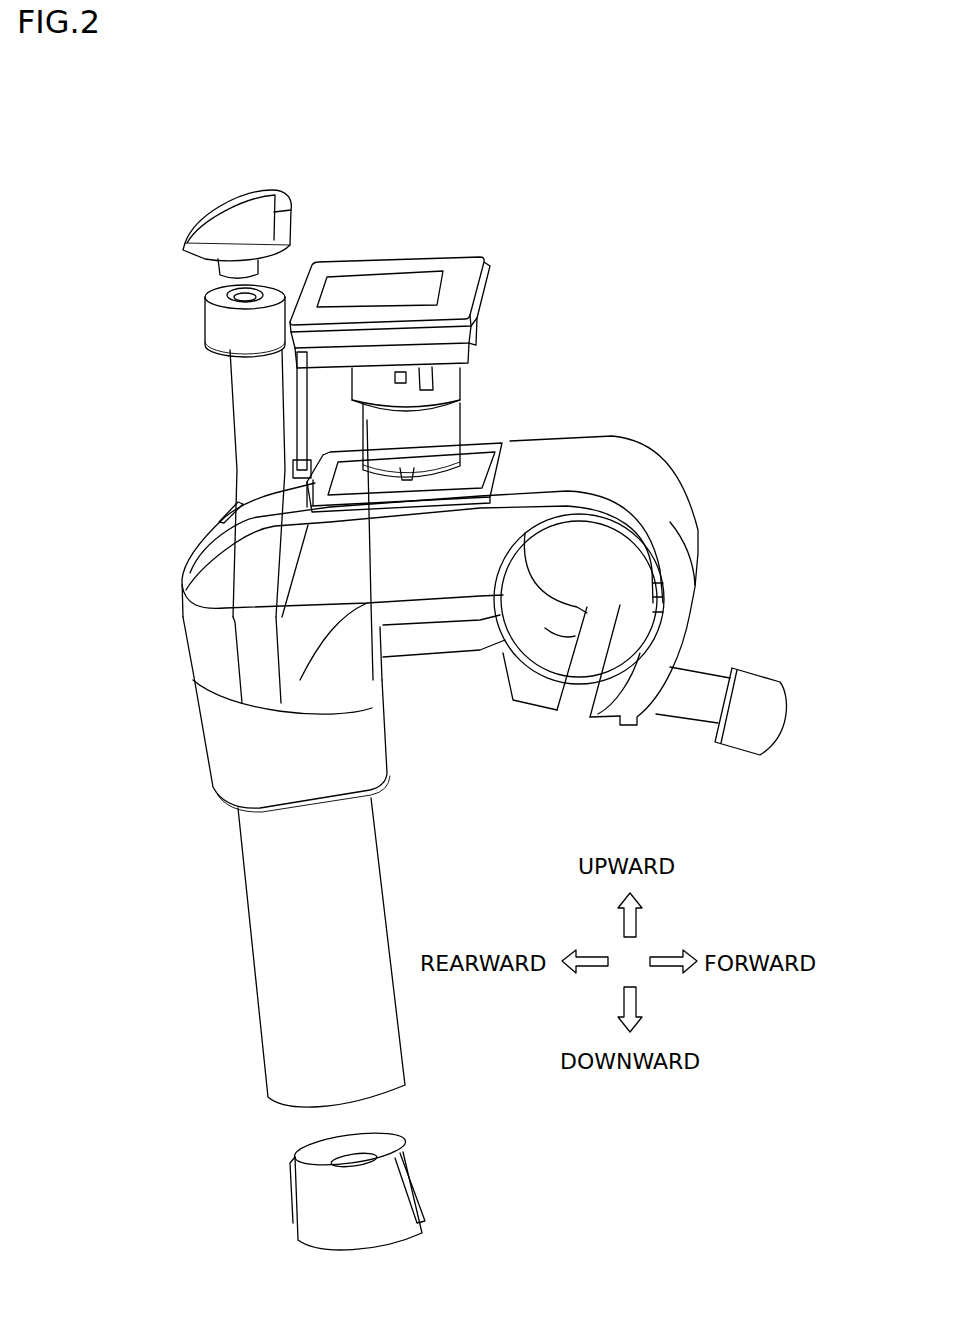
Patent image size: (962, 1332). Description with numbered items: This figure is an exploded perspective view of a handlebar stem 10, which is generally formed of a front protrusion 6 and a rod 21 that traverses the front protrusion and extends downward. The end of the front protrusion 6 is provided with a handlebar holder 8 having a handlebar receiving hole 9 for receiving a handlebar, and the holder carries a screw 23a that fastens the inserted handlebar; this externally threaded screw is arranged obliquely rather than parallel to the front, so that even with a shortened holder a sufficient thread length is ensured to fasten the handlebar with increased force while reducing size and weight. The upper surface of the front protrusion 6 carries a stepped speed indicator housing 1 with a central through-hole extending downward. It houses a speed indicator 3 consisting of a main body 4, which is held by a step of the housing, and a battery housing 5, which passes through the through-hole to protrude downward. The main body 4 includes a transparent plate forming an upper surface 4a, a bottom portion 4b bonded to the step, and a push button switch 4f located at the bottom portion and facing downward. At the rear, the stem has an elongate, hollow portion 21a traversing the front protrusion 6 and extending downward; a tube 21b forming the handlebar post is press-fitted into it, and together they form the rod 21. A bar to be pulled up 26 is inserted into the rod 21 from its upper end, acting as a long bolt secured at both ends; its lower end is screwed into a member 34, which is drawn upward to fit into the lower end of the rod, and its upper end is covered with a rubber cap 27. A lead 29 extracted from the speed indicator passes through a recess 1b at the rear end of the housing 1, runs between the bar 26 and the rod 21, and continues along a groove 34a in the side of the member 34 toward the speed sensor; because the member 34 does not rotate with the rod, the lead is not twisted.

The speed indicator housing 1 is at (478, 440).
The recess 1b is at (305, 480).
The speed indicator 3 is at (630, 290).
The main body 4 is at (563, 258).
The upper surface 4a is at (428, 274).
The bottom portion 4b is at (478, 320).
The push button switch 4f is at (460, 418).
The battery housing 5 is at (445, 432).
The front protrusion 6 is at (790, 136).
The handlebar holder 8 is at (632, 758).
The handlebar receiving hole 9 is at (538, 625).
The handlebar stem 10 is at (128, 286).
The rod 21 is at (128, 748).
The elongate, hollow portion 21a is at (222, 763).
The tube 21b is at (280, 963).
The screw 23a is at (737, 740).
The bar to be pulled up 26 is at (255, 450).
The rubber cap 27 is at (186, 246).
The lead 29 is at (300, 410).
The member 34 is at (407, 1189).
The groove 34a is at (405, 1162).